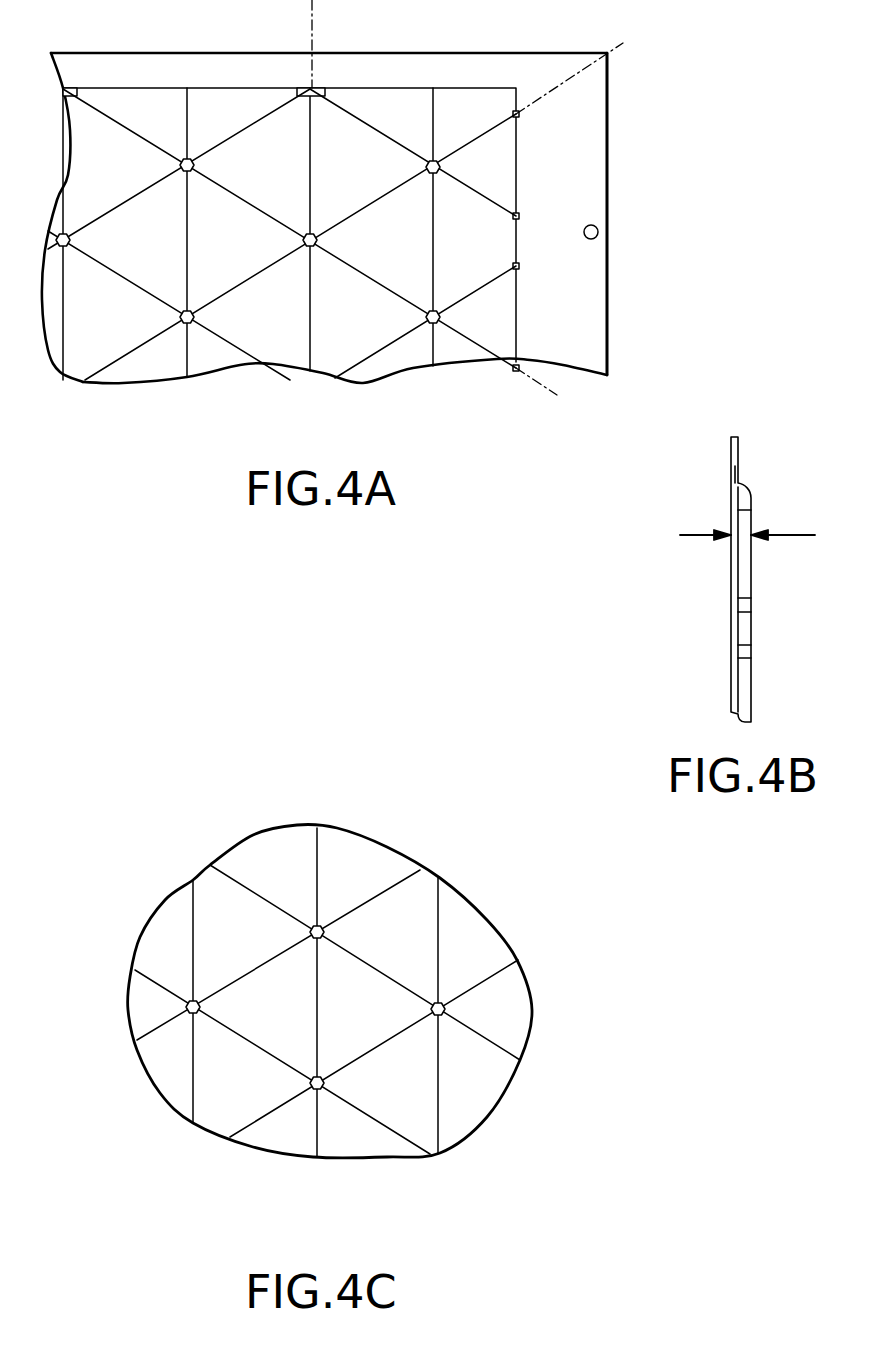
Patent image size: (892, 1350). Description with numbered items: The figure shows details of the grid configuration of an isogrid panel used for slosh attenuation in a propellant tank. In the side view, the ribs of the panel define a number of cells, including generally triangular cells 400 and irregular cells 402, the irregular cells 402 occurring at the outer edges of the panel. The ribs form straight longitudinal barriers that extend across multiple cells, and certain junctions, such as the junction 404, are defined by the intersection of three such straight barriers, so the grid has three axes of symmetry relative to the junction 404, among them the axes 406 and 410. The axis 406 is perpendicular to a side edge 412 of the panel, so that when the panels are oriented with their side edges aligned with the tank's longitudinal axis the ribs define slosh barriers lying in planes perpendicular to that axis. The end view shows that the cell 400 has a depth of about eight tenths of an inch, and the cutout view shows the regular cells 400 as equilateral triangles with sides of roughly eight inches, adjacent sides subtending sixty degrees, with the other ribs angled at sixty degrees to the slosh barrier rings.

In FIG. 4A, the triangular cell 400 is at (257, 147).
In FIG. 4B, the triangular cell 400 is at (740, 561).
In FIG. 4C, the triangular cell 400 is at (423, 898).
In FIG. 4A, the irregular cell 402 is at (487, 157).
In FIG. 4A, the junction 404 is at (312, 247).
In FIG. 4A, the axis of symmetry 406 is at (330, 32).
In FIG. 4A, the axis of symmetry 410 is at (615, 58).
In FIG. 4A, the side edge 412 is at (357, 88).